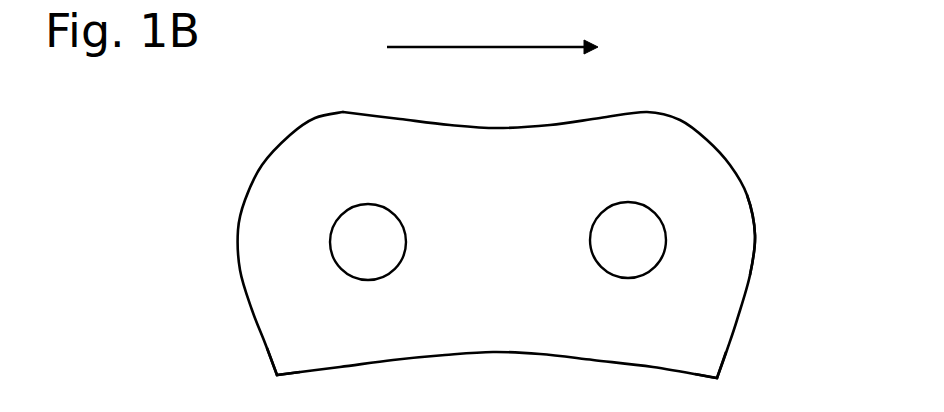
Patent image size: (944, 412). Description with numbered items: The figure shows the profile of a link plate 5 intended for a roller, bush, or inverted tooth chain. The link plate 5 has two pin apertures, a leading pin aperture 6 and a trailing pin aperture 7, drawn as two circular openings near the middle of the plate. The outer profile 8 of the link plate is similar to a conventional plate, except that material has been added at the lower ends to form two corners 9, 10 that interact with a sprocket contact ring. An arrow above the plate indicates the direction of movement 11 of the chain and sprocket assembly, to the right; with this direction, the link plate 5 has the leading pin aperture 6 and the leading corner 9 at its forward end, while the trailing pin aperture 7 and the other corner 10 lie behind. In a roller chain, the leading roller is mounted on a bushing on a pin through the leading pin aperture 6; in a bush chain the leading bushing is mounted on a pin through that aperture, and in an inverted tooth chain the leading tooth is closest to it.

The link plate 5 is at (757, 107).
The leading pin aperture 6 is at (628, 240).
The trailing pin aperture 7 is at (382, 243).
The profile 8 is at (753, 247).
The leading corner 9 is at (717, 378).
The corner 10 is at (277, 375).
The direction of movement 11 is at (492, 68).